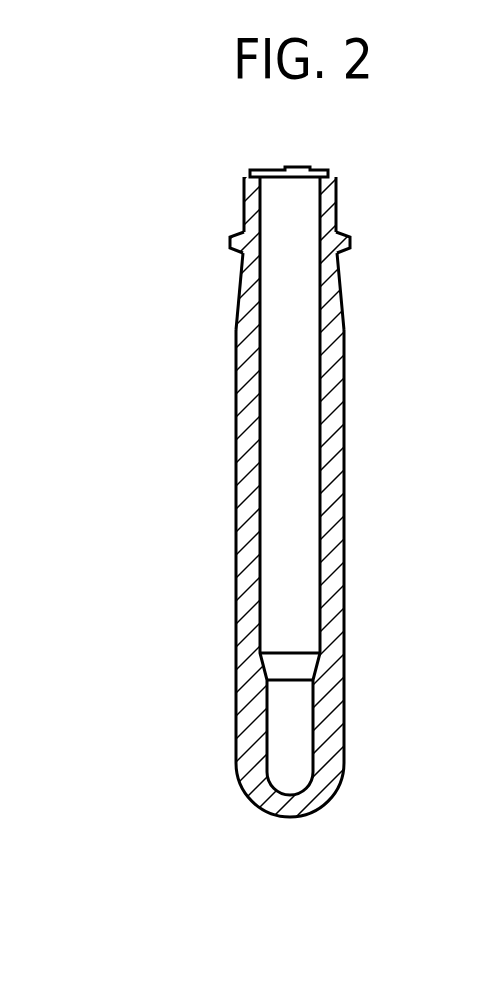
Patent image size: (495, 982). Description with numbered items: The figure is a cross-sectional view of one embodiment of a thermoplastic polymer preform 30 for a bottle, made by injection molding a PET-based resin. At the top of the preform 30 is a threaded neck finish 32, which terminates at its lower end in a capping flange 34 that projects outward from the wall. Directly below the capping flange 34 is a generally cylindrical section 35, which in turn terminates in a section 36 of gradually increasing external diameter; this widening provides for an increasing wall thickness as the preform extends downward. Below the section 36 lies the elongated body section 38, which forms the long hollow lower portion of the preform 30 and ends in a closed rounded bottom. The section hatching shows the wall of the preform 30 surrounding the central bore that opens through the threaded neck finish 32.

The preform 30 is at (199, 159).
The threaded neck finish 32 is at (337, 203).
The capping flange 34 is at (350, 241).
The generally cylindrical section 35 is at (241, 277).
The section of gradually increasing external diameter 36 is at (340, 292).
The elongated body section 38 is at (345, 470).